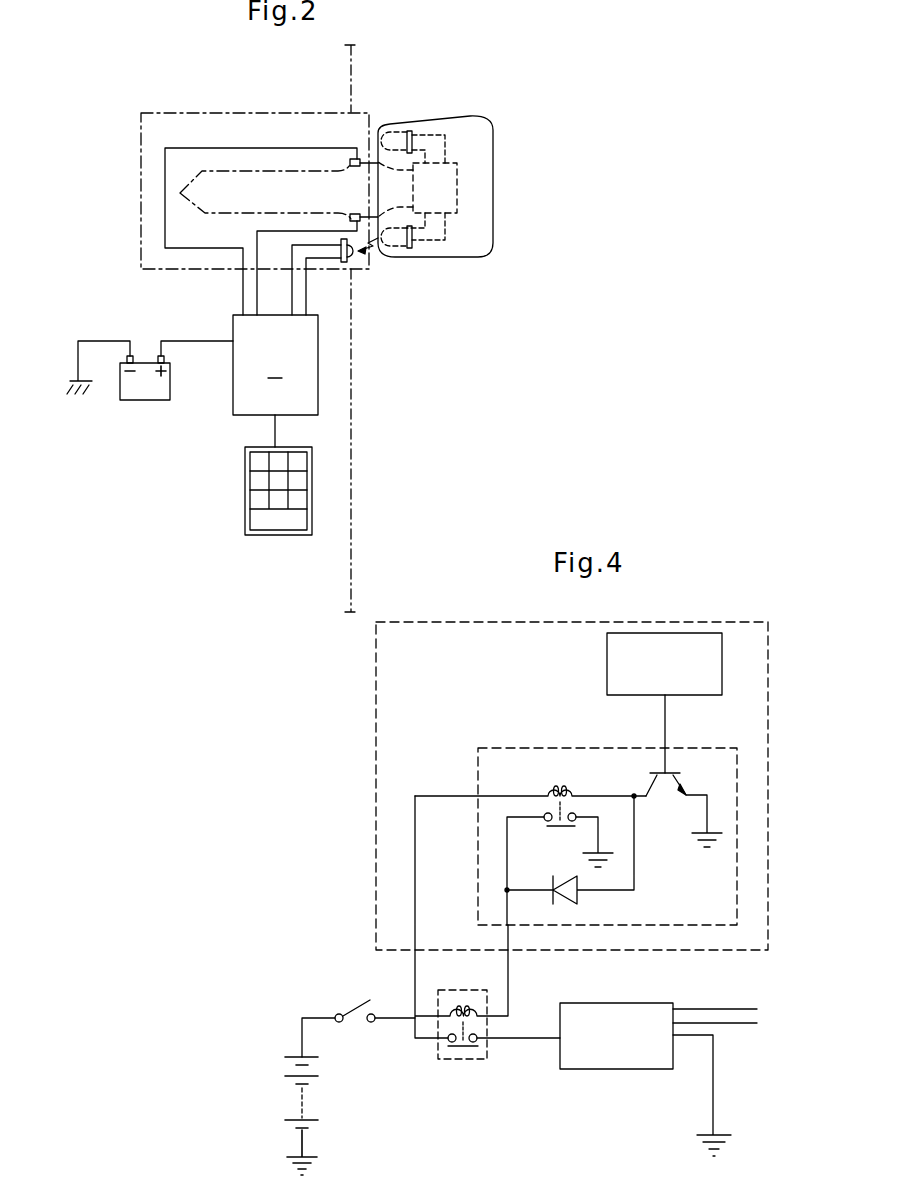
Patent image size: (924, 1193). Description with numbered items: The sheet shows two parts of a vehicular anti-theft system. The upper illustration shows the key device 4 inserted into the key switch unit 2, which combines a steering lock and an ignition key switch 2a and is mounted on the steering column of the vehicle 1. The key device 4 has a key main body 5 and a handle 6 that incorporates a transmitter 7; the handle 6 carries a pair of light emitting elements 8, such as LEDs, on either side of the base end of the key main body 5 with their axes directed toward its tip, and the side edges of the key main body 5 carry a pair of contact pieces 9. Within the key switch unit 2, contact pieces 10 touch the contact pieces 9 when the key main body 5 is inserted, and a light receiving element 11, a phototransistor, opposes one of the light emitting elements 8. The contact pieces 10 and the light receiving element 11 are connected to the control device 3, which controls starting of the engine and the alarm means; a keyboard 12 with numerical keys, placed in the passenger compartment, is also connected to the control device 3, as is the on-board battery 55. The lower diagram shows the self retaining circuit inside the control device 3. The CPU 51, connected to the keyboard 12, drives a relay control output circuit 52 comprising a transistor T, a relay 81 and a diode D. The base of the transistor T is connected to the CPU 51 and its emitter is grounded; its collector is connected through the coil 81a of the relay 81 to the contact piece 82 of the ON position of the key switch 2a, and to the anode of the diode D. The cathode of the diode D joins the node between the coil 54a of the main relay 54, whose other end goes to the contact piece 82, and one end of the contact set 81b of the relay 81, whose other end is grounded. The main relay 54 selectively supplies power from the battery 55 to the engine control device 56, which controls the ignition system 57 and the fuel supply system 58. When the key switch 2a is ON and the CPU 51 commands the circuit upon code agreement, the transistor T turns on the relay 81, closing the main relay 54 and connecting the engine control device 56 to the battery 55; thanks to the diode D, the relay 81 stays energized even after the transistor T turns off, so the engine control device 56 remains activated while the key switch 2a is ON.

In FIG. 2, the vehicle 1 is at (354, 100).
In FIG. 2, the key switch unit 2 is at (197, 111).
In FIG. 4, the ignition key switch 2a is at (348, 1012).
In FIG. 2, the control device 3 is at (275, 365).
In FIG. 4, the control device 3 is at (376, 773).
In FIG. 2, the key device 4 is at (446, 187).
In FIG. 2, the key main body 5 is at (233, 170).
In FIG. 2, the handle 6 is at (445, 120).
In FIG. 2, the transmitter 7 is at (457, 188).
In FIG. 2, the light emitting elements 8 is at (388, 130).
In FIG. 2, the contact pieces 9 is at (351, 211).
In FIG. 2, the contact pieces 10 is at (356, 157).
In FIG. 2, the light receiving element 11 is at (349, 262).
In FIG. 2, the keyboard 12 is at (278, 535).
In FIG. 4, the CPU 51 is at (650, 633).
In FIG. 4, the relay control output circuit 52 is at (512, 748).
In FIG. 4, the main relay 54 is at (487, 950).
In FIG. 4, the coil 54a is at (463, 1008).
In FIG. 2, the on-board battery 55 is at (149, 404).
In FIG. 4, the on-board battery 55 is at (310, 1083).
In FIG. 4, the engine control device 56 is at (604, 1069).
In FIG. 4, the ignition system 57 is at (746, 1030).
In FIG. 4, the fuel supply system 58 is at (738, 1009).
In FIG. 4, the relay 81 is at (555, 831).
In FIG. 4, the coil 81a is at (558, 791).
In FIG. 4, the contact set 81b is at (544, 815).
In FIG. 4, the contact piece 82 is at (371, 1024).
In FIG. 4, the transistor T is at (670, 774).
In FIG. 4, the diode D is at (549, 880).